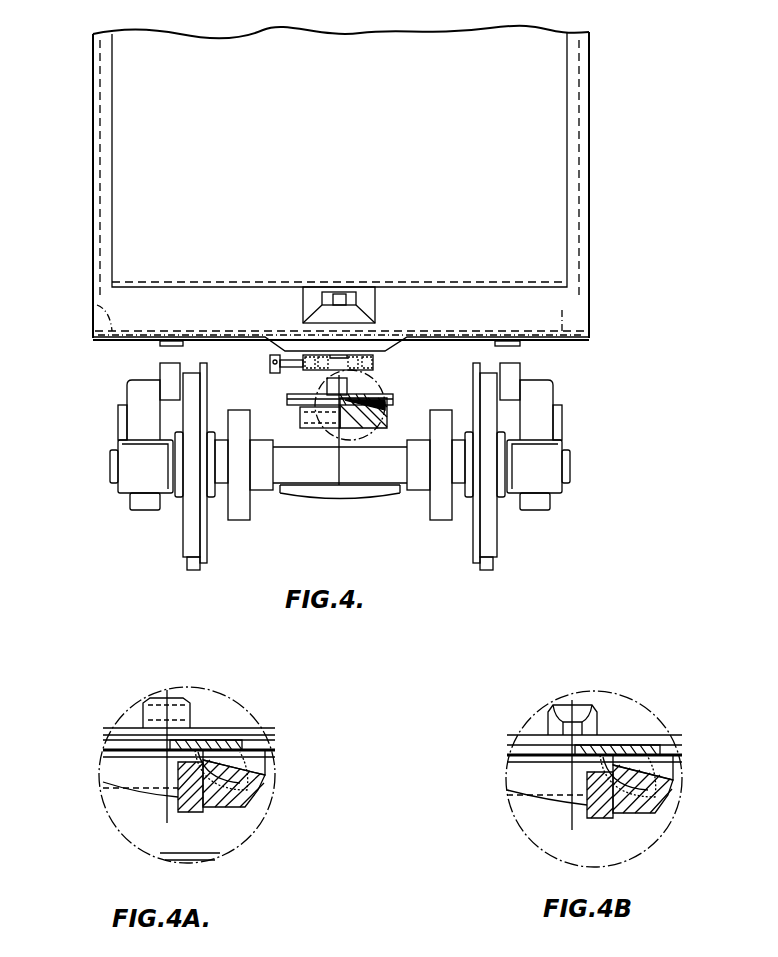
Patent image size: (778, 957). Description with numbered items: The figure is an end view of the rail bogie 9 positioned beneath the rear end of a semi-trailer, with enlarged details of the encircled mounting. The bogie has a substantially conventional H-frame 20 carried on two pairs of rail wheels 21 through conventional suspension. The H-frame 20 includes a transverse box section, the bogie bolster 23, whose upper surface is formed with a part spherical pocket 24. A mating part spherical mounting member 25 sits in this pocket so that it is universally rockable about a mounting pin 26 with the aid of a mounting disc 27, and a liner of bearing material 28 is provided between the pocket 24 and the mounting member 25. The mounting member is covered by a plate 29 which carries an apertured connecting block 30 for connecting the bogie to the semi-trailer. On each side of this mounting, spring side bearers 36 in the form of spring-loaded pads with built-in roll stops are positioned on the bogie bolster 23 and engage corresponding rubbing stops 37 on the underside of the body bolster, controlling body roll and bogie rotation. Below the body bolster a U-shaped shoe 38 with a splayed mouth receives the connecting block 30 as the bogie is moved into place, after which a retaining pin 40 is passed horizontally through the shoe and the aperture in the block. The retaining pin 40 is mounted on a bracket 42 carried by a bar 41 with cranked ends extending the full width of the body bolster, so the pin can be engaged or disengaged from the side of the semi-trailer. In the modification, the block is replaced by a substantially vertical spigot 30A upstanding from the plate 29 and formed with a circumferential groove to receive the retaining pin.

In FIG. 4, the rail bogie 9 is at (328, 505).
In FIG. 4, the H-frame 20 is at (540, 384).
In FIG. 4, the rail wheels 21 is at (190, 535).
In FIG. 4, the bogie bolster 23 is at (367, 487).
In FIG. 4A, the part spherical pocket 24 is at (205, 783).
In FIG. 4B, the part spherical pocket 24 is at (615, 790).
In FIG. 4, the part spherical mounting member 25 is at (365, 400).
In FIG. 4A, the part spherical mounting member 25 is at (235, 752).
In FIG. 4B, the part spherical mounting member 25 is at (640, 757).
In FIG. 4, the mounting pin 26 is at (300, 415).
In FIG. 4A, the mounting pin 26 is at (178, 800).
In FIG. 4B, the mounting pin 26 is at (587, 808).
In FIG. 4A, the mounting disc 27 is at (200, 745).
In FIG. 4B, the mounting disc 27 is at (610, 747).
In FIG. 4A, the liner of bearing material 28 is at (255, 775).
In FIG. 4B, the liner of bearing material 28 is at (665, 780).
In FIG. 4, the plate 29 is at (300, 394).
In FIG. 4, the connecting block 30 is at (302, 360).
In FIG. 4A, the connecting block 30 is at (143, 706).
In FIG. 4B, the spigot 30A is at (548, 712).
In FIG. 4, the spring side bearers 36 is at (165, 373).
In FIG. 4, the rubbing stops 37 is at (170, 341).
In FIG. 4, the U-shaped shoe 38 is at (365, 357).
In FIG. 4, the retaining pin 40 is at (300, 356).
In FIG. 4, the bar 41 is at (95, 305).
In FIG. 4, the bracket 42 is at (265, 338).